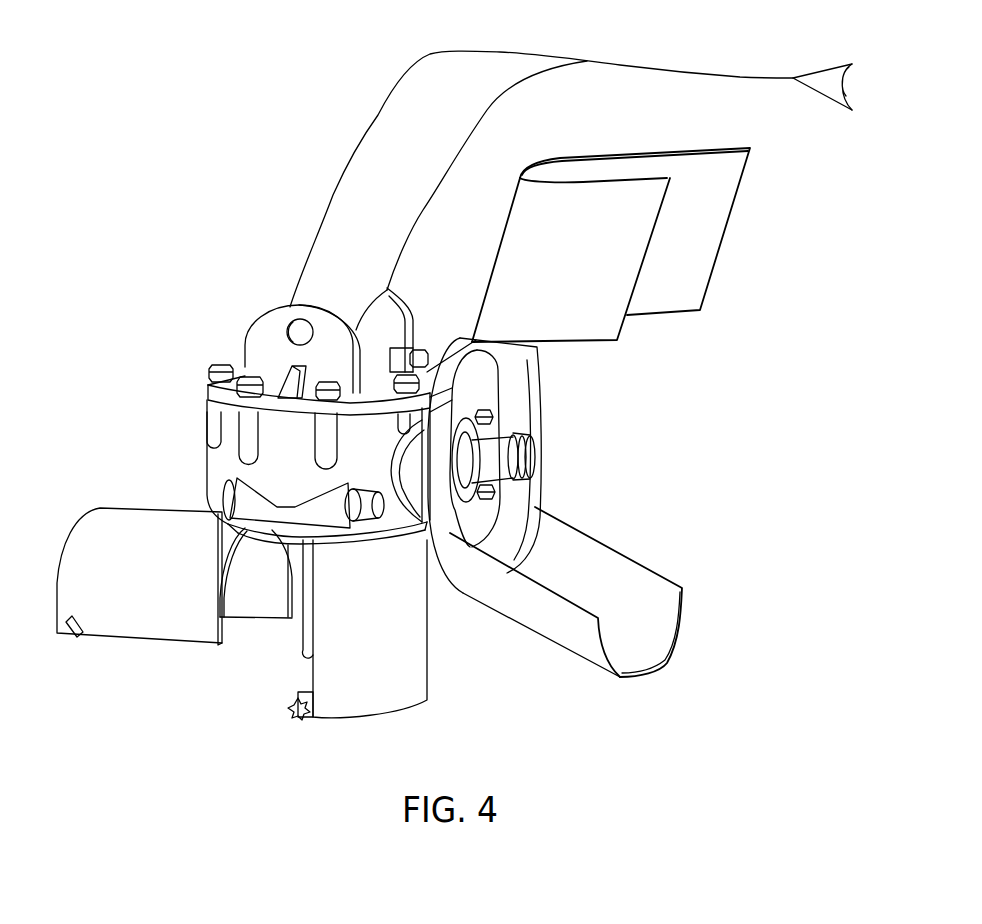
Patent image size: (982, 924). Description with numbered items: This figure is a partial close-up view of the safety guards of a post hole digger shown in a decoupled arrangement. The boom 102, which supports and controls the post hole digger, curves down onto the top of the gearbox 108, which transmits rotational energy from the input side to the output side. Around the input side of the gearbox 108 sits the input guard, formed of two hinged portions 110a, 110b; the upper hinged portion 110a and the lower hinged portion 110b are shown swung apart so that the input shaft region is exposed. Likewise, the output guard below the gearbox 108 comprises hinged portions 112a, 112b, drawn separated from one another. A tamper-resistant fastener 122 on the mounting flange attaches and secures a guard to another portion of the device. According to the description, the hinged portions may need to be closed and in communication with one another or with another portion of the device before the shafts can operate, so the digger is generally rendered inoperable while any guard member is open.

The boom 102 is at (333, 250).
The gearbox 108 is at (232, 452).
The hinged portion of input guard 110a is at (590, 328).
The hinged portion of input guard 110b is at (585, 552).
The hinged portion of output guard 112a is at (133, 623).
The hinged portion of output guard 112b is at (387, 693).
The tamper-resistant fastener 122 is at (492, 492).